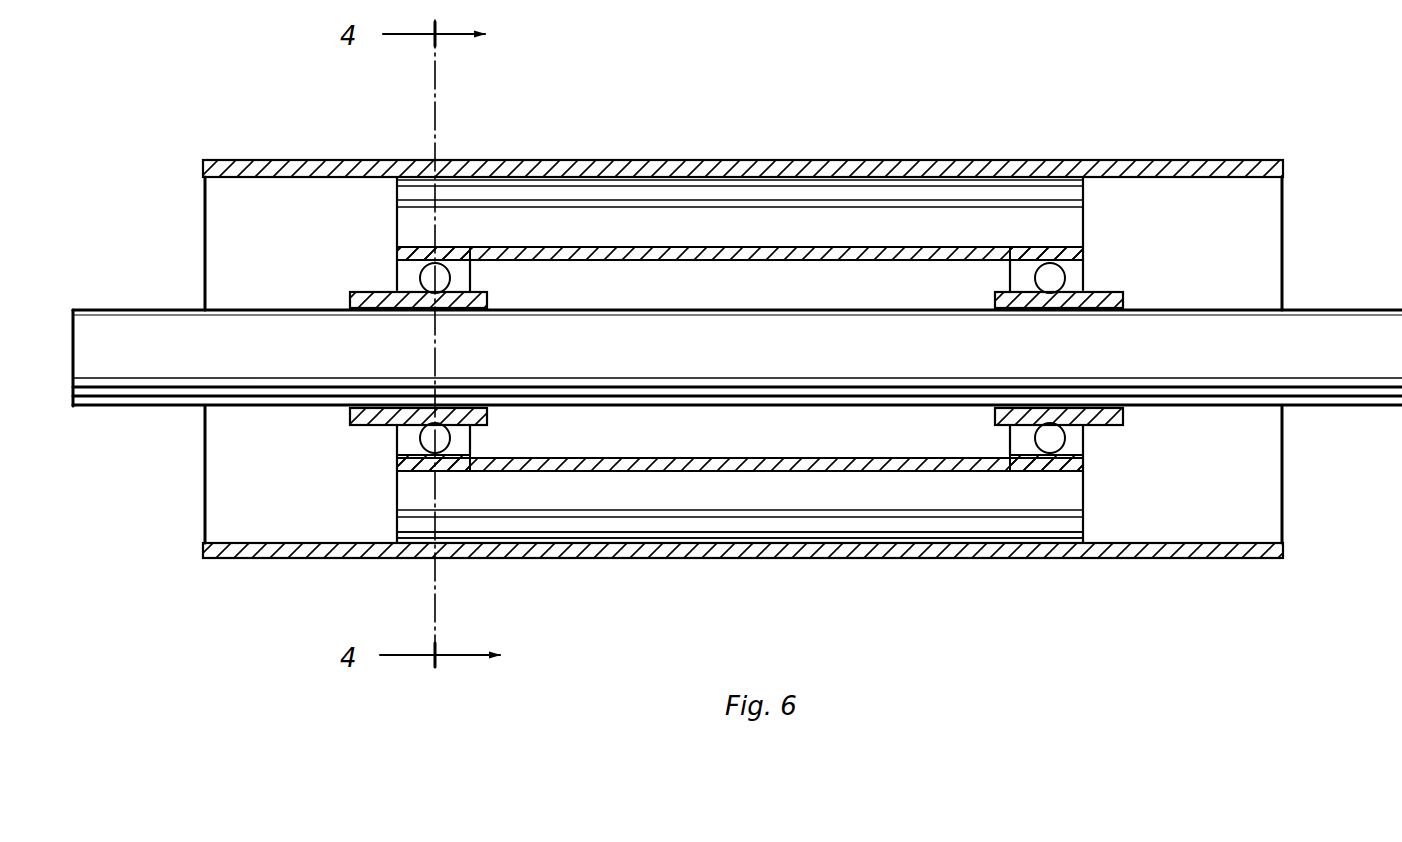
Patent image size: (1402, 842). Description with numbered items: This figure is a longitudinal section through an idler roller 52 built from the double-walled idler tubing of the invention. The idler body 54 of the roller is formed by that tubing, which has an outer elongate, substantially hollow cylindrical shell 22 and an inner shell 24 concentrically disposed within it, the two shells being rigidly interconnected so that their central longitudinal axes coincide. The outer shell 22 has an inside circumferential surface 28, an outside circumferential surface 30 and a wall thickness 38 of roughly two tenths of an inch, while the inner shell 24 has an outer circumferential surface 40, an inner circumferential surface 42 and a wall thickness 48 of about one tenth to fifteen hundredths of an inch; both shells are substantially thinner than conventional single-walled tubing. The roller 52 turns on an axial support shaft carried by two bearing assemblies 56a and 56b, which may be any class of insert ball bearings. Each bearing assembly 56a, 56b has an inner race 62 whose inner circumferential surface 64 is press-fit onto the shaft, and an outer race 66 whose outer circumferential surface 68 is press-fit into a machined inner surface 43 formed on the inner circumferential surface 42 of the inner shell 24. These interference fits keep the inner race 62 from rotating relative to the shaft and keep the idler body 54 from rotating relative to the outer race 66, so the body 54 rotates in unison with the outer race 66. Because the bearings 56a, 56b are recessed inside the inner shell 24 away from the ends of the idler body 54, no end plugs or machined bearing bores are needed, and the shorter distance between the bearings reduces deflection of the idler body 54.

The outer shell 22 is at (285, 560).
The inner shell 24 is at (686, 473).
The inside circumferential surface 28 is at (326, 548).
The outside circumferential surface 30 is at (228, 563).
The wall thickness 38 is at (1198, 508).
The outer circumferential surface 40 is at (605, 473).
The inner circumferential surface 42 is at (753, 473).
The machined inner surface 43 is at (446, 245).
The wall thickness 48 is at (553, 430).
The idler roller 52 is at (1362, 338).
The idler body 54 is at (845, 158).
The bearing assembly 56a is at (358, 294).
The bearing assembly 56b is at (1130, 296).
The inner race 62 is at (462, 294).
The inner circumferential surface 64 is at (478, 296).
The outer race 66 is at (462, 246).
The outer circumferential surface 68 is at (400, 249).